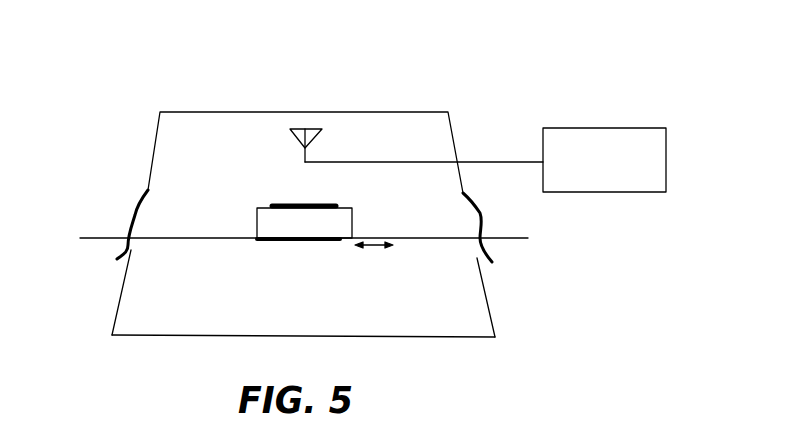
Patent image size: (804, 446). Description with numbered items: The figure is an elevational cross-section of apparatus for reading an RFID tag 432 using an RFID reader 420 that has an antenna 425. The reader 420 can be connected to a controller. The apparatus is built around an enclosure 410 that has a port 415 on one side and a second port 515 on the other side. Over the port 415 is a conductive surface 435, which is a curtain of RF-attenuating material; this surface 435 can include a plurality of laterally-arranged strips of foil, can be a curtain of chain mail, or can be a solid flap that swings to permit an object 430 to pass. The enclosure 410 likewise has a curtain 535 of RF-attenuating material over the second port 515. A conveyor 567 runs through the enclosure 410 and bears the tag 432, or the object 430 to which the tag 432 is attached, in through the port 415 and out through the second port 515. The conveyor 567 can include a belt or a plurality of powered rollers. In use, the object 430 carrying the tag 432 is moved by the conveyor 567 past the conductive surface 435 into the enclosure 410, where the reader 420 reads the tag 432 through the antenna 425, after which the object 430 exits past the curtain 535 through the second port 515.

The enclosure 410 is at (159, 121).
The port 415 is at (140, 252).
The RFID reader 420 is at (589, 128).
The antenna 425 is at (315, 142).
The object 430 is at (257, 228).
The RFID tag 432 is at (282, 203).
The conductive surface 435 is at (147, 197).
The second port 515 is at (468, 253).
The curtain 535 is at (484, 216).
The conveyor 567 is at (233, 240).